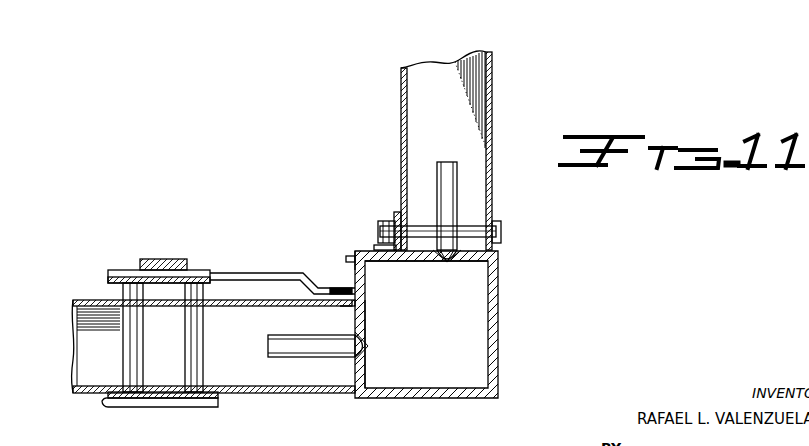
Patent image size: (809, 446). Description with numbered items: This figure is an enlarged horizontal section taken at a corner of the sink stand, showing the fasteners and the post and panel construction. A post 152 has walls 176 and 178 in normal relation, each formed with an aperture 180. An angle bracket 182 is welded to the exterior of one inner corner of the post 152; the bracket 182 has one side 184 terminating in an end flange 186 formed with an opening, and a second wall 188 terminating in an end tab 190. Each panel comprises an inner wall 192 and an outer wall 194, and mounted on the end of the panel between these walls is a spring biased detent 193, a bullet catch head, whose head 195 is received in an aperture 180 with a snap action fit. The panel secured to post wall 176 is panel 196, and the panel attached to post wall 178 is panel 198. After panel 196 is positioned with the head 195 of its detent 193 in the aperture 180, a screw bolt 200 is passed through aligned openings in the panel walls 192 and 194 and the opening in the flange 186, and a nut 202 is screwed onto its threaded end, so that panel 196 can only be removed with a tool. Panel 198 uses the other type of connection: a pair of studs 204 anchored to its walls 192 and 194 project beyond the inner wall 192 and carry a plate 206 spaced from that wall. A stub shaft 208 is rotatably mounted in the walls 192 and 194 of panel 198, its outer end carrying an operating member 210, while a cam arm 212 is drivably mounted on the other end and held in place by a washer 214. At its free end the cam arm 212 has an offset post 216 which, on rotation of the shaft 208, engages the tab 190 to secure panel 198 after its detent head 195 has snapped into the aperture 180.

The post 152 is at (498, 312).
The wall 176 is at (490, 257).
The wall 178 is at (366, 380).
The aperture 180 is at (449, 264).
The angle bracket 182 is at (350, 260).
The side 184 is at (378, 248).
The end flange 186 is at (397, 212).
The second wall 188 is at (353, 251).
The end tab 190 is at (353, 309).
The inner wall 192 is at (401, 88).
The spring biased detent 193 is at (447, 162).
The outer wall 194 is at (492, 88).
The head 195 is at (441, 264).
The panel 196 is at (462, 60).
The panel 198 is at (78, 373).
The screw bolt 200 is at (480, 226).
The nut 202 is at (384, 222).
The studs 204 is at (122, 357).
The plate 206 is at (108, 277).
The stub shaft 208 is at (160, 393).
The operating member 210 is at (222, 400).
The cam arm 212 is at (258, 273).
The washer 214 is at (195, 268).
The offset post 216 is at (339, 288).